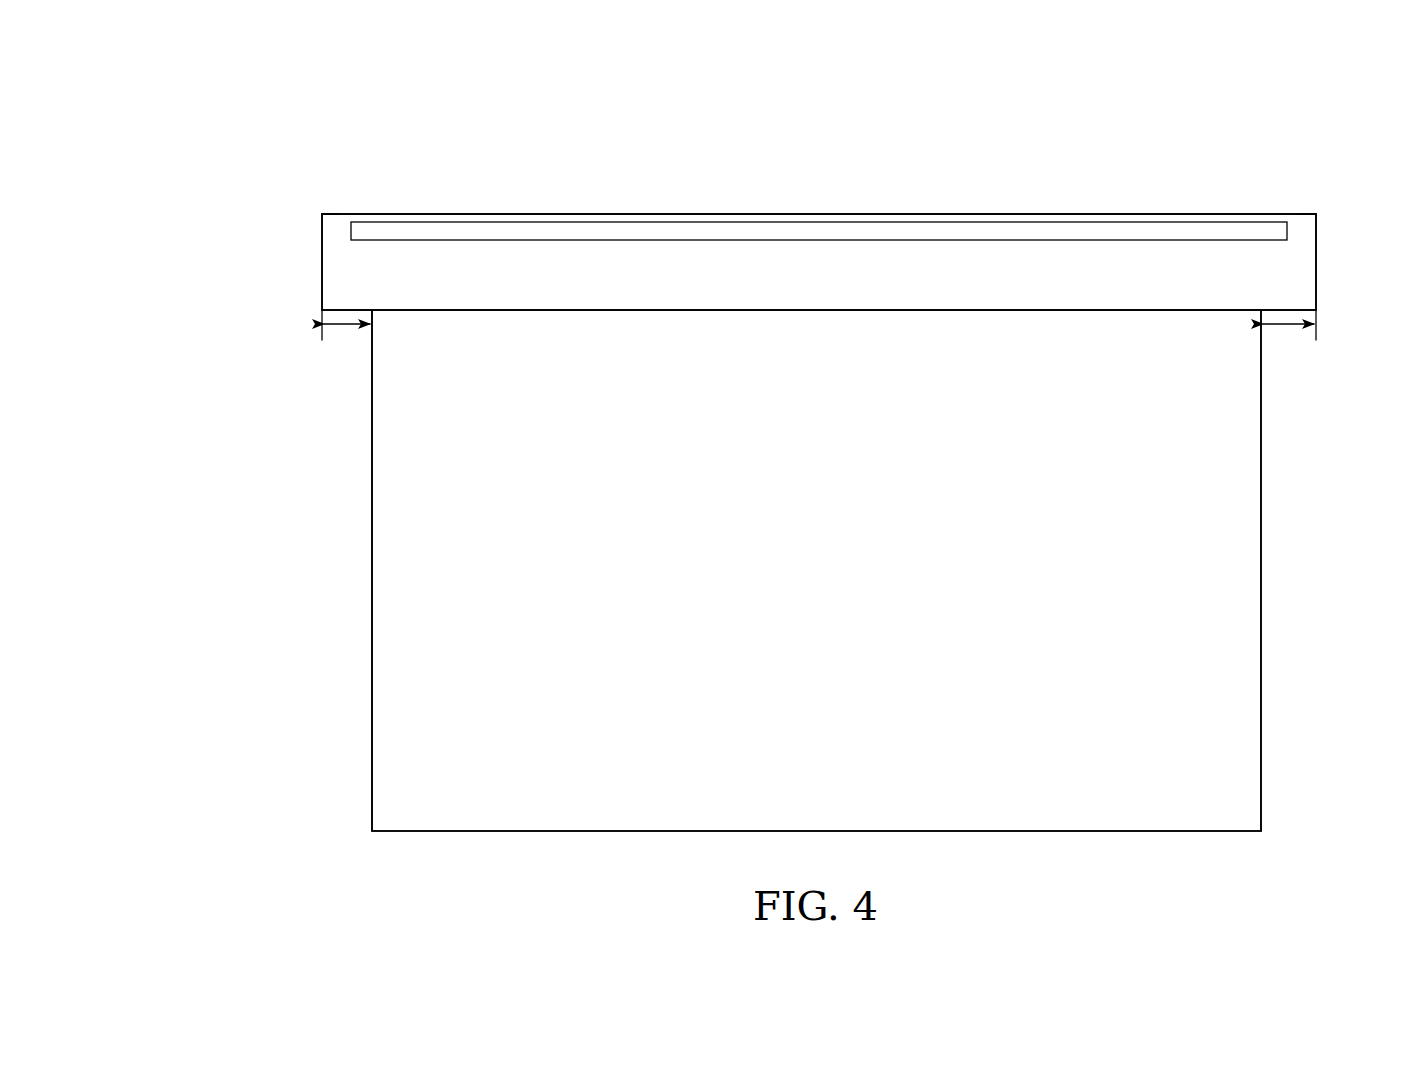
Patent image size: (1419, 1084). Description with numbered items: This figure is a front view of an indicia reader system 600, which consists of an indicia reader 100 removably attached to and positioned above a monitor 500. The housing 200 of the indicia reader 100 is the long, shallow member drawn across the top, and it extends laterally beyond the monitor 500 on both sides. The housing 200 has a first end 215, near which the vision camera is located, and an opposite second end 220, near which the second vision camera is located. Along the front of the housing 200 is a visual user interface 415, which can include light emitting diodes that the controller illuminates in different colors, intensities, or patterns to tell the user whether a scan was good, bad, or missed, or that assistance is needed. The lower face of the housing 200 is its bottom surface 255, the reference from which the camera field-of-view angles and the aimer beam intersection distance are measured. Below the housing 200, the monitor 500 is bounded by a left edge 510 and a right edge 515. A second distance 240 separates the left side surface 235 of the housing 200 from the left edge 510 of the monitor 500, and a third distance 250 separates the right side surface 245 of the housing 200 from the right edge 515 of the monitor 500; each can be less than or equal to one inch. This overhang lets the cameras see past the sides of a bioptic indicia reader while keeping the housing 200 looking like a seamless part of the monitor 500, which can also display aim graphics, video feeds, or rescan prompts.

The indicia reader system 600 is at (190, 115).
The indicia reader 100 is at (412, 210).
The housing 200 is at (562, 210).
The visual user interface 415 is at (736, 233).
The first end 215 is at (329, 210).
The second end 220 is at (1306, 210).
The left side surface 235 is at (322, 264).
The right side surface 245 is at (1316, 262).
The bottom surface 255 is at (820, 311).
The second distance 240 is at (346, 336).
The third distance 250 is at (1286, 336).
The left edge 510 is at (372, 511).
The monitor 500 is at (365, 585).
The right edge 515 is at (1261, 570).